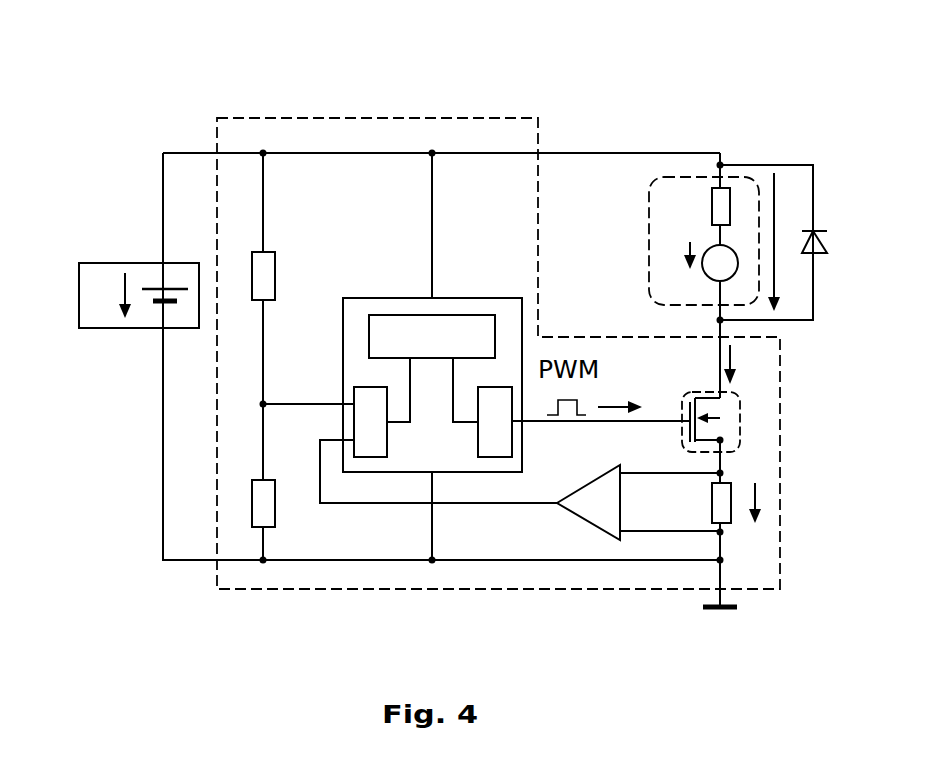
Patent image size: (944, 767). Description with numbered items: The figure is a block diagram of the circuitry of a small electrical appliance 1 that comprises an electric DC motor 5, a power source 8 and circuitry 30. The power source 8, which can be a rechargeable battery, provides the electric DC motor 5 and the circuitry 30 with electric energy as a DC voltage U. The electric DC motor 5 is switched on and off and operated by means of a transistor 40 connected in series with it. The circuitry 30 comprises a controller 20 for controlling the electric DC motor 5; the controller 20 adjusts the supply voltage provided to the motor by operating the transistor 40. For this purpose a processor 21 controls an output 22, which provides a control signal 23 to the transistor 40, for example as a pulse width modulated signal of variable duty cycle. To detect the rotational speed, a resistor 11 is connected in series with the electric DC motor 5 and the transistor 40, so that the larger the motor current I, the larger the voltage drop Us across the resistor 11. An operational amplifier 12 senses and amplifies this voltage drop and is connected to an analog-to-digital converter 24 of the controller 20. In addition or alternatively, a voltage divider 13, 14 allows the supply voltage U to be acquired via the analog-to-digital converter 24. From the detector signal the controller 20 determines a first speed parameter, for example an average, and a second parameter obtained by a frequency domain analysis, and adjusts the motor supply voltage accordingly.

The small electrical appliance 1 is at (782, 93).
The electric DC motor 5 is at (690, 177).
The power source 8 is at (100, 263).
The resistor 11 is at (732, 515).
The operational amplifier 12 is at (590, 502).
The voltage divider 13 is at (276, 272).
The voltage divider 14 is at (276, 512).
The controller 20 is at (410, 472).
The processor 21 is at (398, 315).
The output 22 is at (500, 457).
The control signal 23 is at (557, 425).
The analog-to-digital converter 24 is at (370, 457).
The circuitry 30 is at (505, 118).
The transistor 40 is at (741, 407).